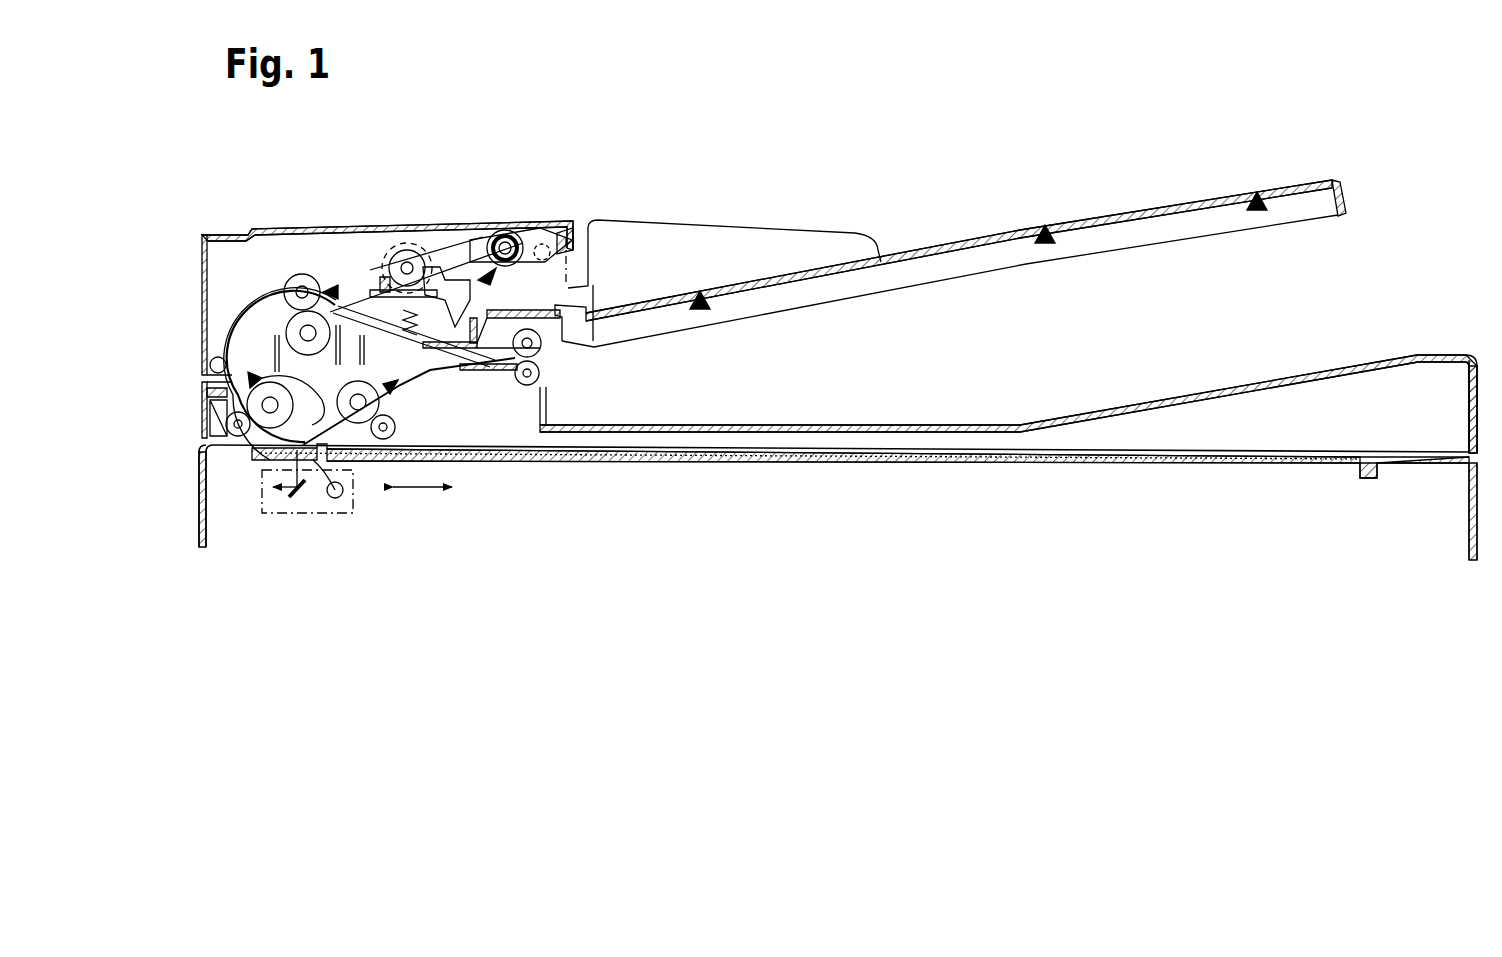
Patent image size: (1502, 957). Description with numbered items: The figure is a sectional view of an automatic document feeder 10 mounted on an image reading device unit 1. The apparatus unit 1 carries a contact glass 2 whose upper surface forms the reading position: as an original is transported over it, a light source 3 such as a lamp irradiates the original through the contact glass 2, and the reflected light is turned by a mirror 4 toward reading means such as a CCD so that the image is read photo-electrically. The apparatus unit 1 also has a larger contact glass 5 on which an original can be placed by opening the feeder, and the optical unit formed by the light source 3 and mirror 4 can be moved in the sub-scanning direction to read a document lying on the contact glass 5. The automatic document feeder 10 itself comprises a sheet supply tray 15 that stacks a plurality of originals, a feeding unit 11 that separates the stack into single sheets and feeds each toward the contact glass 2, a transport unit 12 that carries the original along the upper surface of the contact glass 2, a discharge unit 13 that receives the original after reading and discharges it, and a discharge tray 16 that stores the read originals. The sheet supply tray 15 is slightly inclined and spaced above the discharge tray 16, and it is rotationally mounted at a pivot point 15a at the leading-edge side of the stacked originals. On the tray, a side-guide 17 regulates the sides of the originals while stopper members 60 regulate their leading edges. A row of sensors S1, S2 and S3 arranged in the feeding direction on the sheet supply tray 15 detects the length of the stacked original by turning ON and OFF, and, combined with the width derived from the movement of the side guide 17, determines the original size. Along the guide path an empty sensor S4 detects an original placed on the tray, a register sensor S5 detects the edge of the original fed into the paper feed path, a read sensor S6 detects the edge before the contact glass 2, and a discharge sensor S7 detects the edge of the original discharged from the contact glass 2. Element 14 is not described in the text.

The image reading device unit 1 is at (200, 492).
The contact glass 2 is at (257, 458).
The light source 3 is at (353, 498).
The mirror 4 is at (292, 500).
The contact glass 5 is at (918, 470).
The automatic document feeder 10 is at (500, 195).
The feeding unit 11 is at (352, 255).
The transport unit 12 is at (250, 390).
The discharge unit 13 is at (470, 385).
The roller 14 is at (385, 255).
The sheet supply tray 15 is at (1100, 206).
The pivot point 15a is at (568, 218).
The discharge tray 16 is at (940, 428).
The side-guide 17 is at (822, 240).
The stopper members 60 is at (445, 265).
The sensor S1 is at (700, 309).
The sensor S2 is at (1045, 243).
The sensor S3 is at (1257, 210).
The empty sensor S4 is at (525, 235).
The register sensor S5 is at (325, 265).
The read sensor S6 is at (255, 378).
The discharge sensor S7 is at (395, 380).